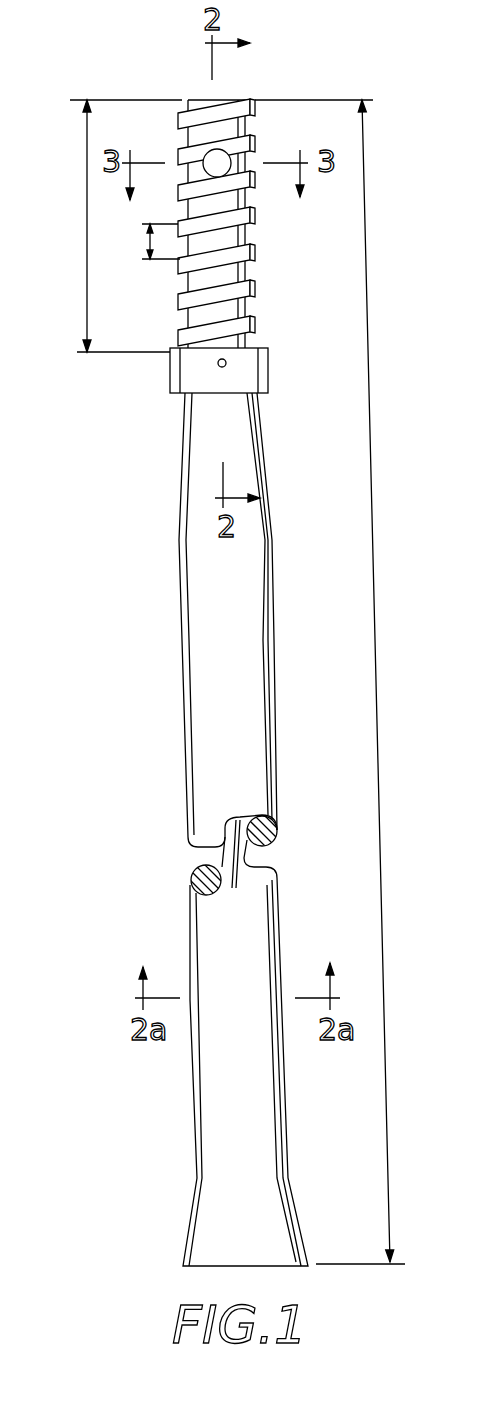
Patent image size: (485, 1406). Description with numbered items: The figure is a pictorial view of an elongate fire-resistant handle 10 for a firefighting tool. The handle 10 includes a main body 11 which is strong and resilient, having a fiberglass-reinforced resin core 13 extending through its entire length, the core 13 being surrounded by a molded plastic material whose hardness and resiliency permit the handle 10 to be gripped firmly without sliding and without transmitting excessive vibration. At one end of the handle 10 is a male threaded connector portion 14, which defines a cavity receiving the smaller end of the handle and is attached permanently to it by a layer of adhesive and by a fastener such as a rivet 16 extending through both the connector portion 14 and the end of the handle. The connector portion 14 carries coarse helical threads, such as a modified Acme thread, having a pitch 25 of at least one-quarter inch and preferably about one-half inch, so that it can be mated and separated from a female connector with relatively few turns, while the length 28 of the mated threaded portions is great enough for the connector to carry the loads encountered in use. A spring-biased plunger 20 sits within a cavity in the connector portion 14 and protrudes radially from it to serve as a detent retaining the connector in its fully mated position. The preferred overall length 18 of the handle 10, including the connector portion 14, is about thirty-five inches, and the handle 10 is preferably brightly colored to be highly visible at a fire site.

The elongate fire-resistant handle 10 is at (233, 829).
The main body 11 is at (266, 463).
The fiberglass-reinforced resin core 13 is at (247, 850).
The male threaded connector portion 14 is at (258, 97).
The rivet 16 is at (226, 365).
The length 18 is at (377, 643).
The spring-biased plunger 20 is at (217, 163).
The pitch 25 is at (147, 242).
The length of the mated portions 28 is at (87, 210).